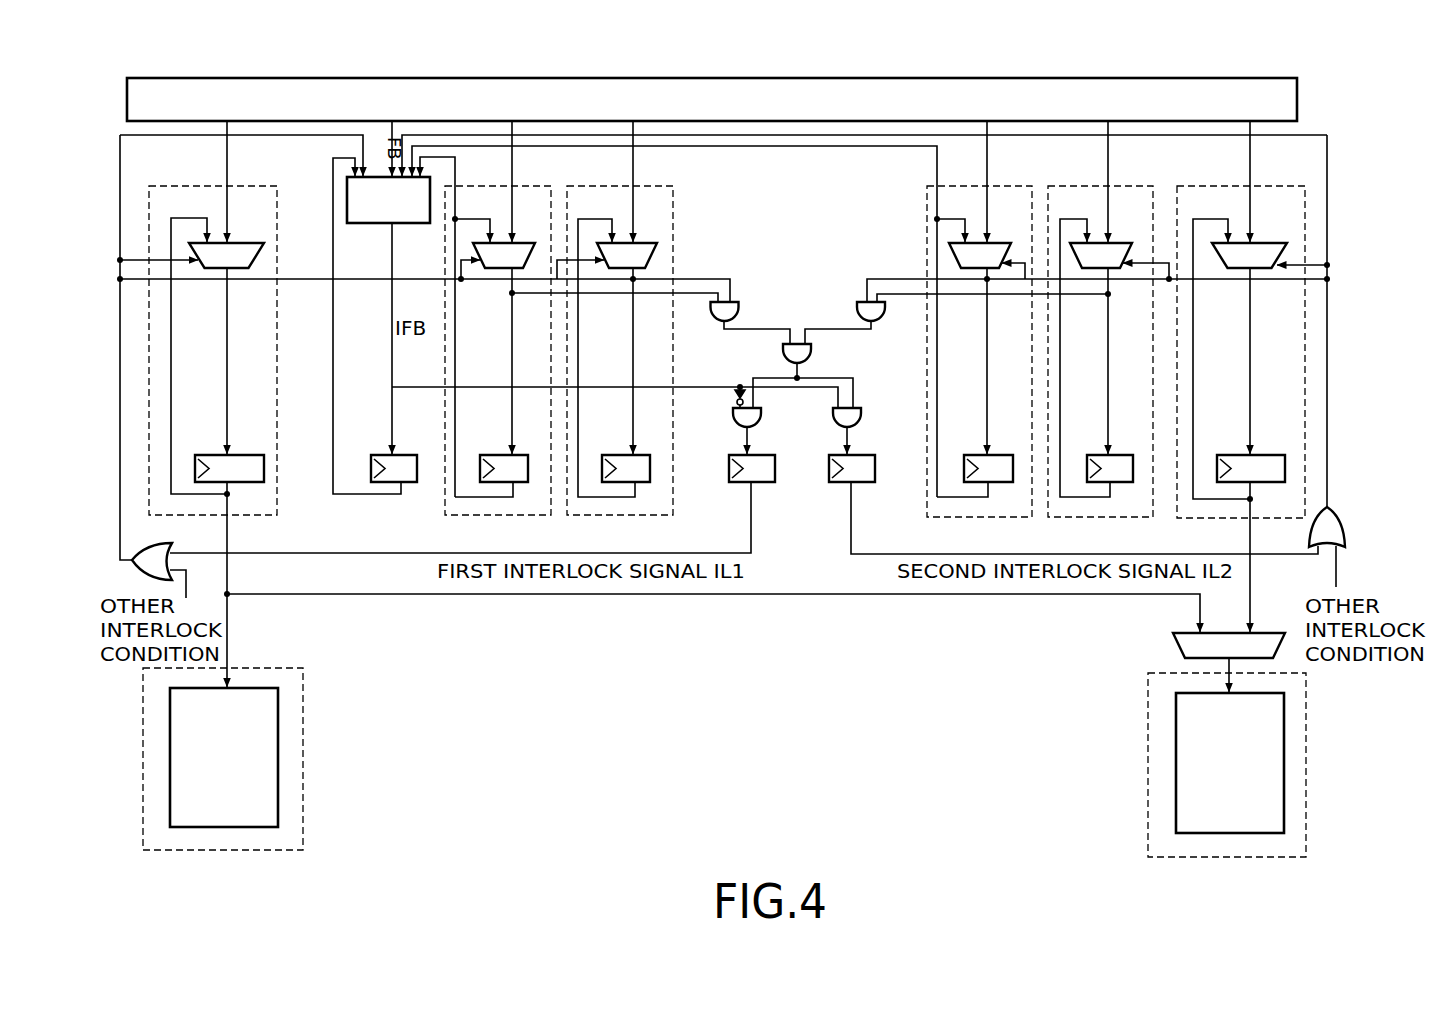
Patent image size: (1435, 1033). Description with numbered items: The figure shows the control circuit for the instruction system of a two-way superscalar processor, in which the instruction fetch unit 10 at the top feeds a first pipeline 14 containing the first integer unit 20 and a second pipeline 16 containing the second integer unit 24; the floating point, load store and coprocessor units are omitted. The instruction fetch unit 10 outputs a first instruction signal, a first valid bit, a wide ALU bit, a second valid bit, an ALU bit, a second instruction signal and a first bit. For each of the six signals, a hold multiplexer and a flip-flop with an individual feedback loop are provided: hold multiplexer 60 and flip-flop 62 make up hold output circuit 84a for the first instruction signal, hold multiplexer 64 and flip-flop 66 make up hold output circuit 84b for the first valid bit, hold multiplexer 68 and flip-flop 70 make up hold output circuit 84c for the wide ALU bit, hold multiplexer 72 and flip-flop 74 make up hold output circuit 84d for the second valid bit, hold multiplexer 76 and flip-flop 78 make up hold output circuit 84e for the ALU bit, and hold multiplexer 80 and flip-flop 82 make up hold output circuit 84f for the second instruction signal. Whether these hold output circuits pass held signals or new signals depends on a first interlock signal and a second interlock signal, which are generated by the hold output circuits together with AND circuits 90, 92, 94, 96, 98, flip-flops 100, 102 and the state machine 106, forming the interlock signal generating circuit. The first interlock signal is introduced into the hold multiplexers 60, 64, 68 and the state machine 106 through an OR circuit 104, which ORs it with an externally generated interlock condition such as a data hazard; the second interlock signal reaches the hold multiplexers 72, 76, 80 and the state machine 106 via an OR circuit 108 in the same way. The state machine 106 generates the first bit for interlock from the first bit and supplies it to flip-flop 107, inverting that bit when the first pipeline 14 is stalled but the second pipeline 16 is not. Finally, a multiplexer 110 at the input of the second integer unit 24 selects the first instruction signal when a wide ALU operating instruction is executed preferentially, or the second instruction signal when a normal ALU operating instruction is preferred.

The instruction fetch unit 10 is at (334, 77).
The first pipeline 14 is at (305, 700).
The second pipeline 16 is at (1146, 704).
The first integer unit 20 is at (279, 744).
The second integer unit 24 is at (1175, 760).
The hold multiplexer 60 is at (238, 242).
The flip-flop 62 is at (241, 449).
The hold multiplexer 64 is at (519, 242).
The flip-flop 66 is at (519, 449).
The hold multiplexer 68 is at (642, 242).
The flip-flop 70 is at (641, 449).
The hold multiplexer 72 is at (994, 242).
The flip-flop 74 is at (994, 449).
The hold multiplexer 76 is at (1116, 242).
The flip-flop 78 is at (1116, 449).
The hold multiplexer 80 is at (1266, 242).
The flip-flop 82 is at (1266, 449).
The hold output circuit 84a is at (279, 507).
The hold output circuit 84b is at (499, 517).
The hold output circuit 84c is at (605, 517).
The hold output circuit 84d is at (957, 519).
The hold output circuit 84e is at (1065, 519).
The hold output circuit 84f is at (1226, 520).
The AND circuit 90 is at (742, 308).
The AND circuit 92 is at (854, 308).
The AND circuit 94 is at (814, 351).
The AND circuit 96 is at (760, 430).
The AND circuit 98 is at (860, 430).
The flip-flop 100 is at (756, 486).
The flip-flop 102 is at (853, 486).
The OR circuit 104 is at (177, 550).
The state machine 106 is at (374, 224).
The flip-flop 107 is at (407, 450).
The OR circuit 108 is at (1331, 513).
The multiplexer 110 is at (1174, 646).